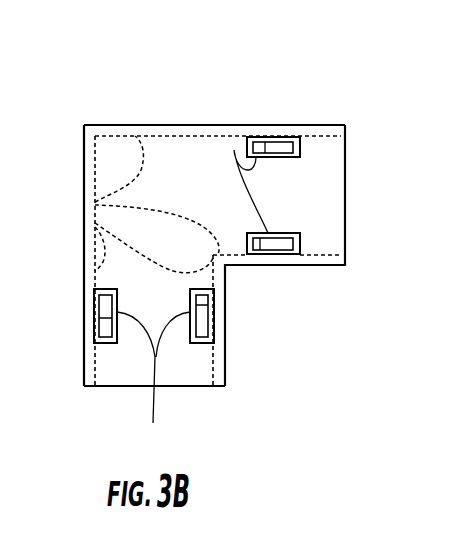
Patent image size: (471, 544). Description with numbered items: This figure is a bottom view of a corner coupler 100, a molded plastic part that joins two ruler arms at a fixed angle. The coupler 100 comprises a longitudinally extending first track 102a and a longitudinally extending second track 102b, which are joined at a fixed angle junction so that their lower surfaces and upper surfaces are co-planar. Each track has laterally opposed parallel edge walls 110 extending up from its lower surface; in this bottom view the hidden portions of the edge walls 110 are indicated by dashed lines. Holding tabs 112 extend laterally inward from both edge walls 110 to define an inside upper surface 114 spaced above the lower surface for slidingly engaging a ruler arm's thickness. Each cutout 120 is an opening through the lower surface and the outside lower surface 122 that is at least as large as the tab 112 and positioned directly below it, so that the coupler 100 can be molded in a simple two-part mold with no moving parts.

The coupler 100 is at (151, 67).
The first track 102a is at (84, 379).
The second track 102b is at (328, 125).
The edge walls 110 is at (277, 137).
The holding tabs 112 is at (289, 140).
The upper surface 114 is at (265, 142).
The cutout 120 is at (234, 150).
The outside lower surface 122 is at (304, 192).